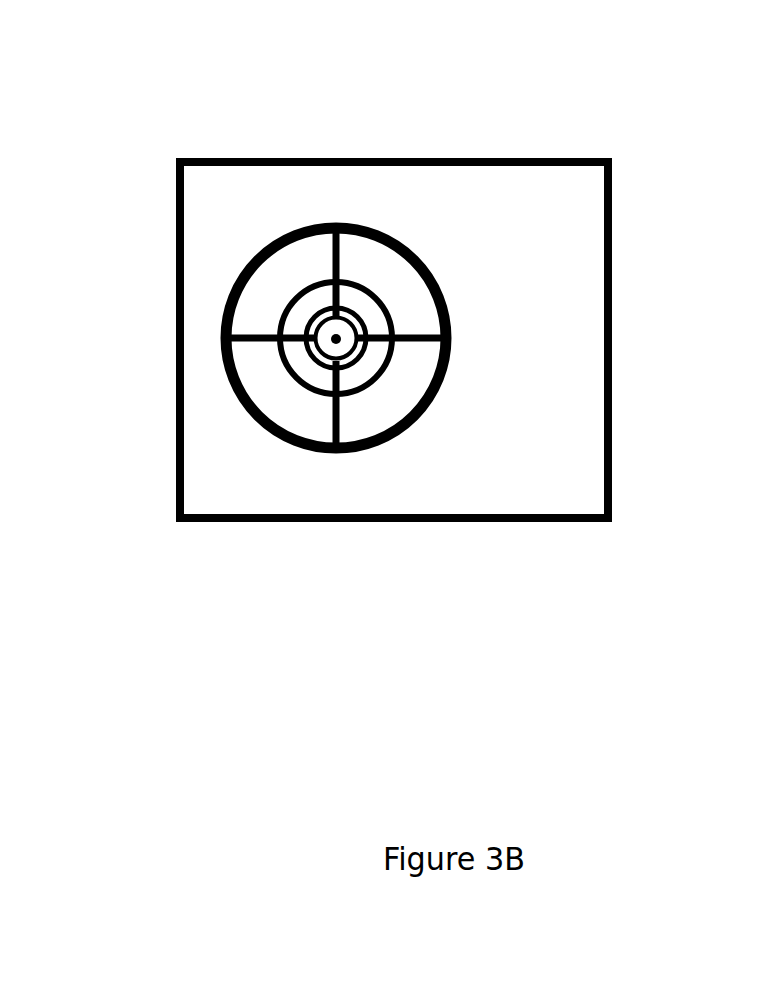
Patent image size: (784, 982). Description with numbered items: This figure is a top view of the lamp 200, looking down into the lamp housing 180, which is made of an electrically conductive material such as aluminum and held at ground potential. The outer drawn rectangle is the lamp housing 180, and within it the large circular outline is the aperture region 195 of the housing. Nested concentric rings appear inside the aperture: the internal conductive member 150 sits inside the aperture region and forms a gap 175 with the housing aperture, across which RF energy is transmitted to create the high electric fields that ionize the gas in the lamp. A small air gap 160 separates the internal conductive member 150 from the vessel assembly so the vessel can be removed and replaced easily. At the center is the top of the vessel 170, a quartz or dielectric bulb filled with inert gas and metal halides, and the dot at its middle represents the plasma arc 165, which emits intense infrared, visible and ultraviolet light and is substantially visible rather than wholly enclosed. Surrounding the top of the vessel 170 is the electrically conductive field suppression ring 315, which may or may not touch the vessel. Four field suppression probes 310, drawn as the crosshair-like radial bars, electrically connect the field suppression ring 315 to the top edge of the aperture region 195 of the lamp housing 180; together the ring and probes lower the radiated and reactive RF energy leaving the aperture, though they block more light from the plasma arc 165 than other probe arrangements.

The lamp 200 is at (266, 126).
The lamp housing 180 is at (613, 356).
The aperture region 195 is at (247, 410).
The internal conductive member 150 is at (390, 318).
The air gap 160 is at (357, 375).
The vessel 170 is at (363, 362).
The plasma arc 165 is at (336, 339).
The field suppression probes 310 is at (338, 260).
The field suppression ring 315 is at (310, 312).
The gap 175 is at (260, 293).